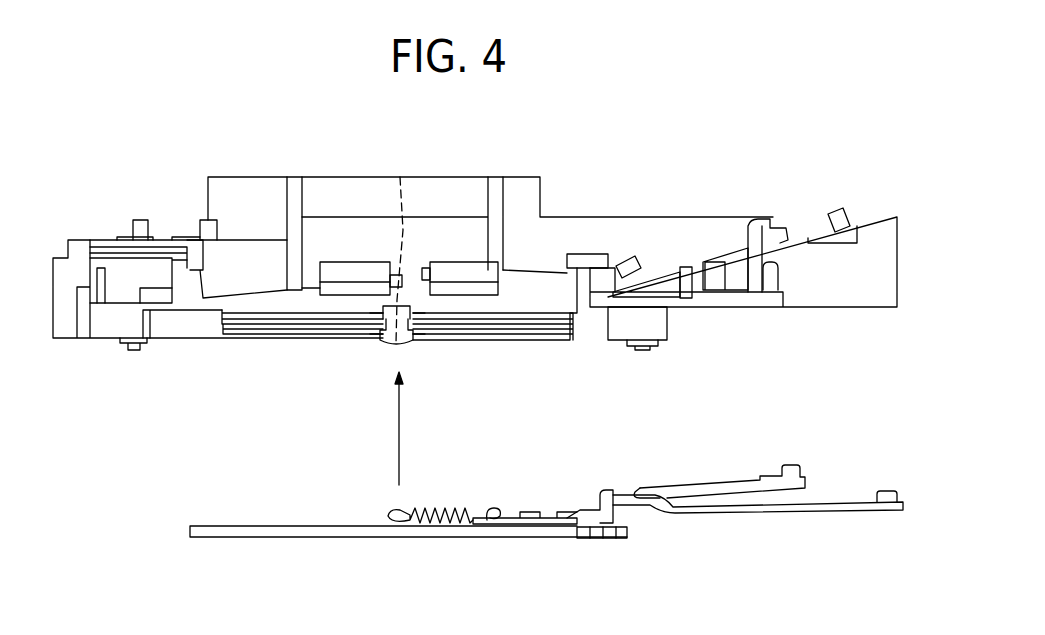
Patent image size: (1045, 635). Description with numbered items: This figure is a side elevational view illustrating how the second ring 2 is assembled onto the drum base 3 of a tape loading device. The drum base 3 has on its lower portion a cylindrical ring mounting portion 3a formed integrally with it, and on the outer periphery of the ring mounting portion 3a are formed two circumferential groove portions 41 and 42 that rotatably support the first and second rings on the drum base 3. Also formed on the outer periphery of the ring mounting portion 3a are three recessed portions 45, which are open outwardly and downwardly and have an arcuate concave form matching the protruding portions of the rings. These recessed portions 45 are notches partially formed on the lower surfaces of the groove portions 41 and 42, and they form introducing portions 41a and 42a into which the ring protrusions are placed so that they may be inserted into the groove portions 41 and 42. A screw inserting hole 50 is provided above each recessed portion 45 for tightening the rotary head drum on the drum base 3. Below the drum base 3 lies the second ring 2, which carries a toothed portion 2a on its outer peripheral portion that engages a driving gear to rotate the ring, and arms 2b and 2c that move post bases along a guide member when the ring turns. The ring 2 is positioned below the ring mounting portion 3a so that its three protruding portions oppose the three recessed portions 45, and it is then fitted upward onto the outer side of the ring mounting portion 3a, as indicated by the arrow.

The second ring 2 is at (256, 537).
The toothed portion 2a is at (605, 539).
The arm 2b is at (708, 488).
The arm 2c is at (787, 512).
The drum base 3 is at (555, 225).
The ring mounting portion 3a is at (552, 343).
The groove portion 41 is at (256, 330).
The introducing portion 41a is at (380, 343).
The groove portion 42 is at (507, 340).
The introducing portion 42a is at (408, 343).
The recessed portion 45 is at (397, 345).
The screw inserting hole 50 is at (400, 175).